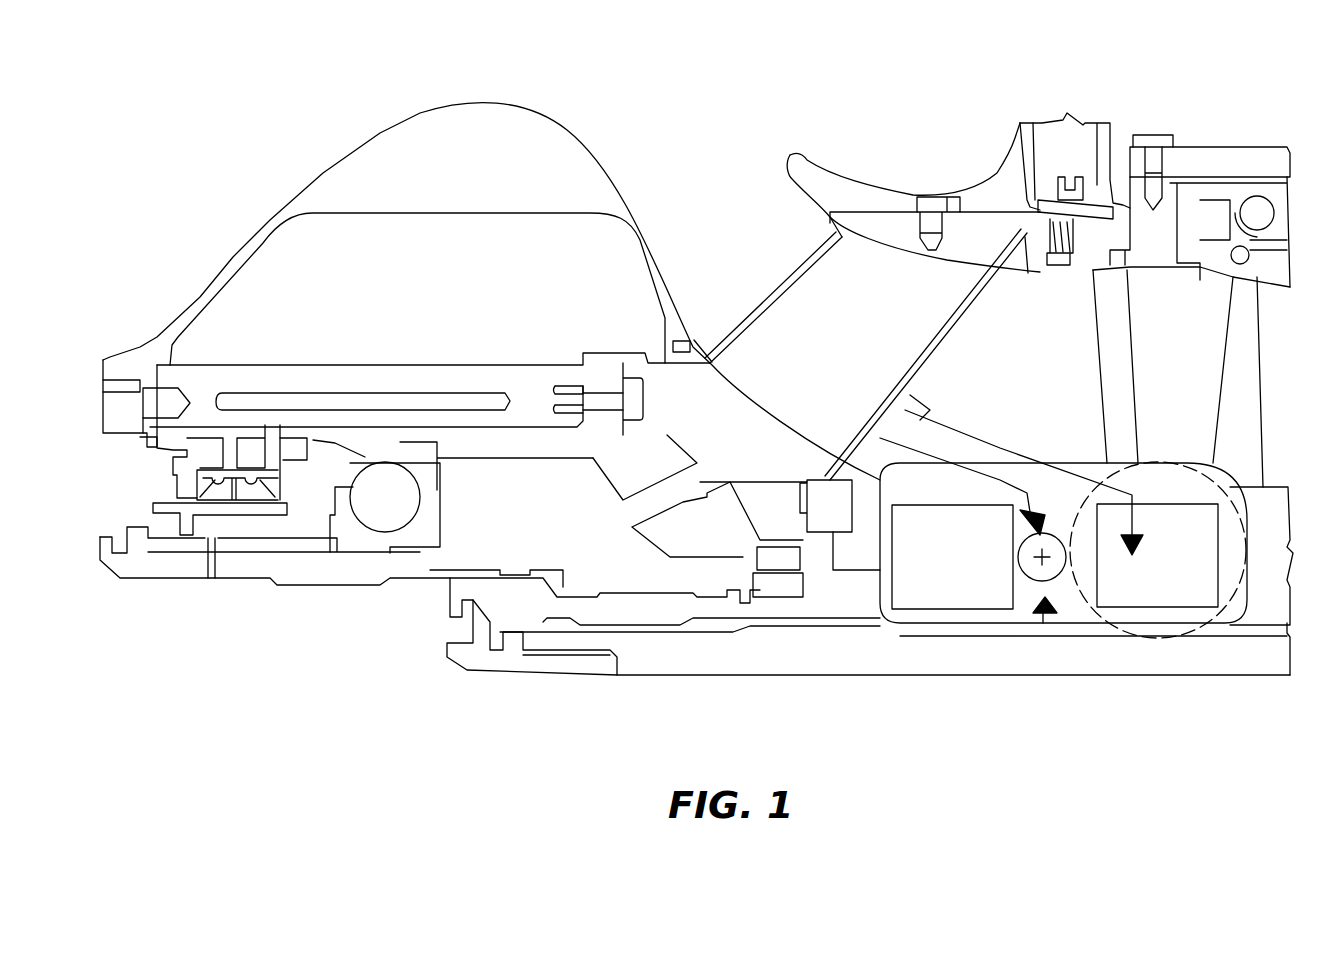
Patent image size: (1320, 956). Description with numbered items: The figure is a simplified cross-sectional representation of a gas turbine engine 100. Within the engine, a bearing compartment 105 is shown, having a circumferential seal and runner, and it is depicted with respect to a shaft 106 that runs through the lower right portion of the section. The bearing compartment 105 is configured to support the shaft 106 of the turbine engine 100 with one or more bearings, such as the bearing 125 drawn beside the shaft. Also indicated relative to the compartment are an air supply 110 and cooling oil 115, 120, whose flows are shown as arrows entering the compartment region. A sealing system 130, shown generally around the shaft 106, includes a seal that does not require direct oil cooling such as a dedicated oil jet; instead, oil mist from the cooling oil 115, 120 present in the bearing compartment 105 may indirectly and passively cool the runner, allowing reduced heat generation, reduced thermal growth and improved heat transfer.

The gas turbine engine 100 is at (696, 413).
The bearing compartment 105 is at (1048, 640).
The shaft 106 is at (1125, 660).
The air supply 110 is at (1000, 453).
The cooling oil 115 is at (927, 453).
The cooling oil 120 is at (963, 632).
The bearing 125 is at (1050, 540).
The sealing system 130 is at (1200, 620).